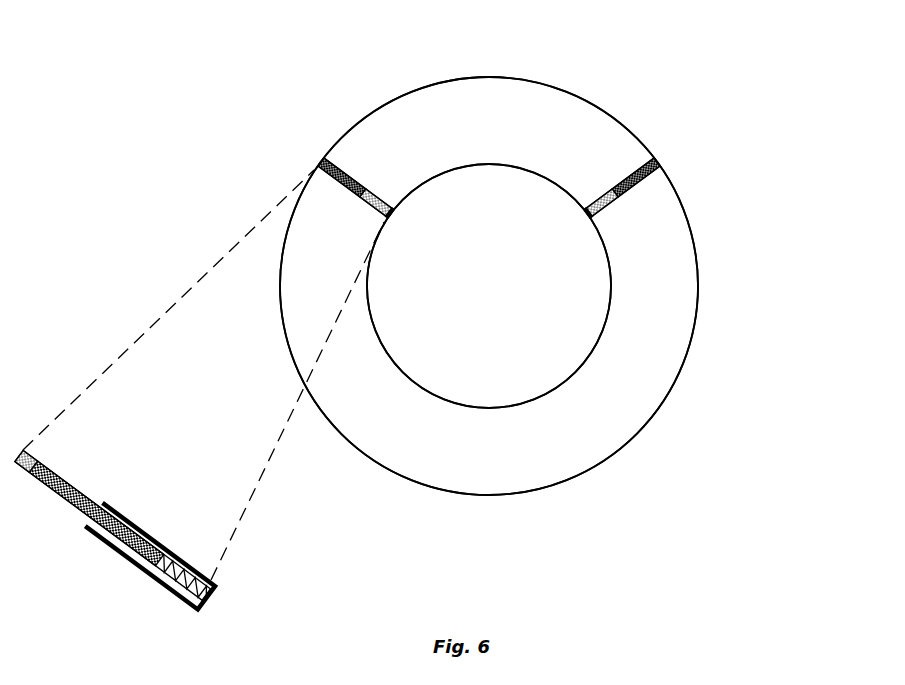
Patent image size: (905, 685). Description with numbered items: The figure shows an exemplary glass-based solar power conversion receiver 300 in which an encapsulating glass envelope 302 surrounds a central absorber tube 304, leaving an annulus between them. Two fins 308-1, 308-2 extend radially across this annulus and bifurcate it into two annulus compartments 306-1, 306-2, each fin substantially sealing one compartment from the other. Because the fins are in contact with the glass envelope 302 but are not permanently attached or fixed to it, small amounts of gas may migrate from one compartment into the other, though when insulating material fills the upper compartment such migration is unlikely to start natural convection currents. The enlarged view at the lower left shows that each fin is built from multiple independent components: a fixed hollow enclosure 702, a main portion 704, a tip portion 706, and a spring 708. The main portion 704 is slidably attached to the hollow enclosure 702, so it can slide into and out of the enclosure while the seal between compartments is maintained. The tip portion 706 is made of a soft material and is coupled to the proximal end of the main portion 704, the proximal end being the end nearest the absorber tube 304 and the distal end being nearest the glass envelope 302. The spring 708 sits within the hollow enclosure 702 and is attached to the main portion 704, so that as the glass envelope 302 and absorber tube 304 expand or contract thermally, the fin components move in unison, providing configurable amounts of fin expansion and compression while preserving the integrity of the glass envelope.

The glass-based solar power conversion receiver 300 is at (127, 55).
The glass envelope 302 is at (590, 102).
The absorber tube 304 is at (597, 344).
The annulus compartment 306-1 is at (520, 132).
The annulus compartment 306-2 is at (520, 455).
The fin 308-1 is at (360, 181).
The fin 308-2 is at (628, 190).
The fixed hollow enclosure 702 is at (148, 534).
The main portion 704 is at (87, 498).
The tip portion 706 is at (37, 454).
The spring 708 is at (201, 576).